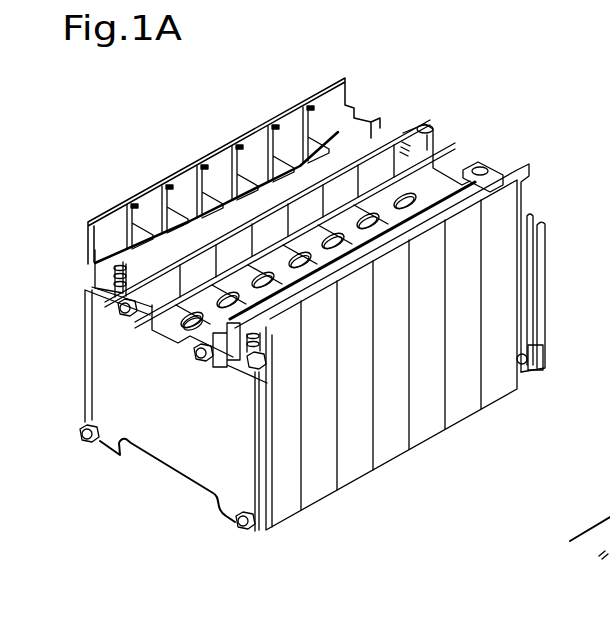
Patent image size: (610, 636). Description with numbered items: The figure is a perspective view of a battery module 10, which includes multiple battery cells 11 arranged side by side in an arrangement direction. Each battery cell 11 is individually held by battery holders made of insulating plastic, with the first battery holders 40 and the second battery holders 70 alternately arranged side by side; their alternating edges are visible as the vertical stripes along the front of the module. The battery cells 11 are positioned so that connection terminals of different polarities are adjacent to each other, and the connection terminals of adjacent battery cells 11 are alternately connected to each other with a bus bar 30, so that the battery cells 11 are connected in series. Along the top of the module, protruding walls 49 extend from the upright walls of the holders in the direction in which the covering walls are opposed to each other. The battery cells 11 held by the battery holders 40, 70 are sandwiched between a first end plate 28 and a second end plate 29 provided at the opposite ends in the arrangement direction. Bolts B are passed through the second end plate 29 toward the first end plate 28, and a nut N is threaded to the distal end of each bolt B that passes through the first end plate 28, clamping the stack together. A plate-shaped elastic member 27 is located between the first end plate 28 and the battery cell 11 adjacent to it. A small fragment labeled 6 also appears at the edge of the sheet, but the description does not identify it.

The battery module 10 is at (84, 137).
The battery cell 11 is at (380, 190).
The bus bar 30 is at (290, 147).
The protruding wall 49 is at (318, 140).
The first battery holder 40 is at (464, 421).
The second battery holder 70 is at (500, 401).
The elastic member 27 is at (528, 268).
The first end plate 28 is at (537, 300).
The second end plate 29 is at (157, 462).
The bolt B is at (235, 530).
The nut N is at (545, 346).
The fragment 6 is at (590, 454).